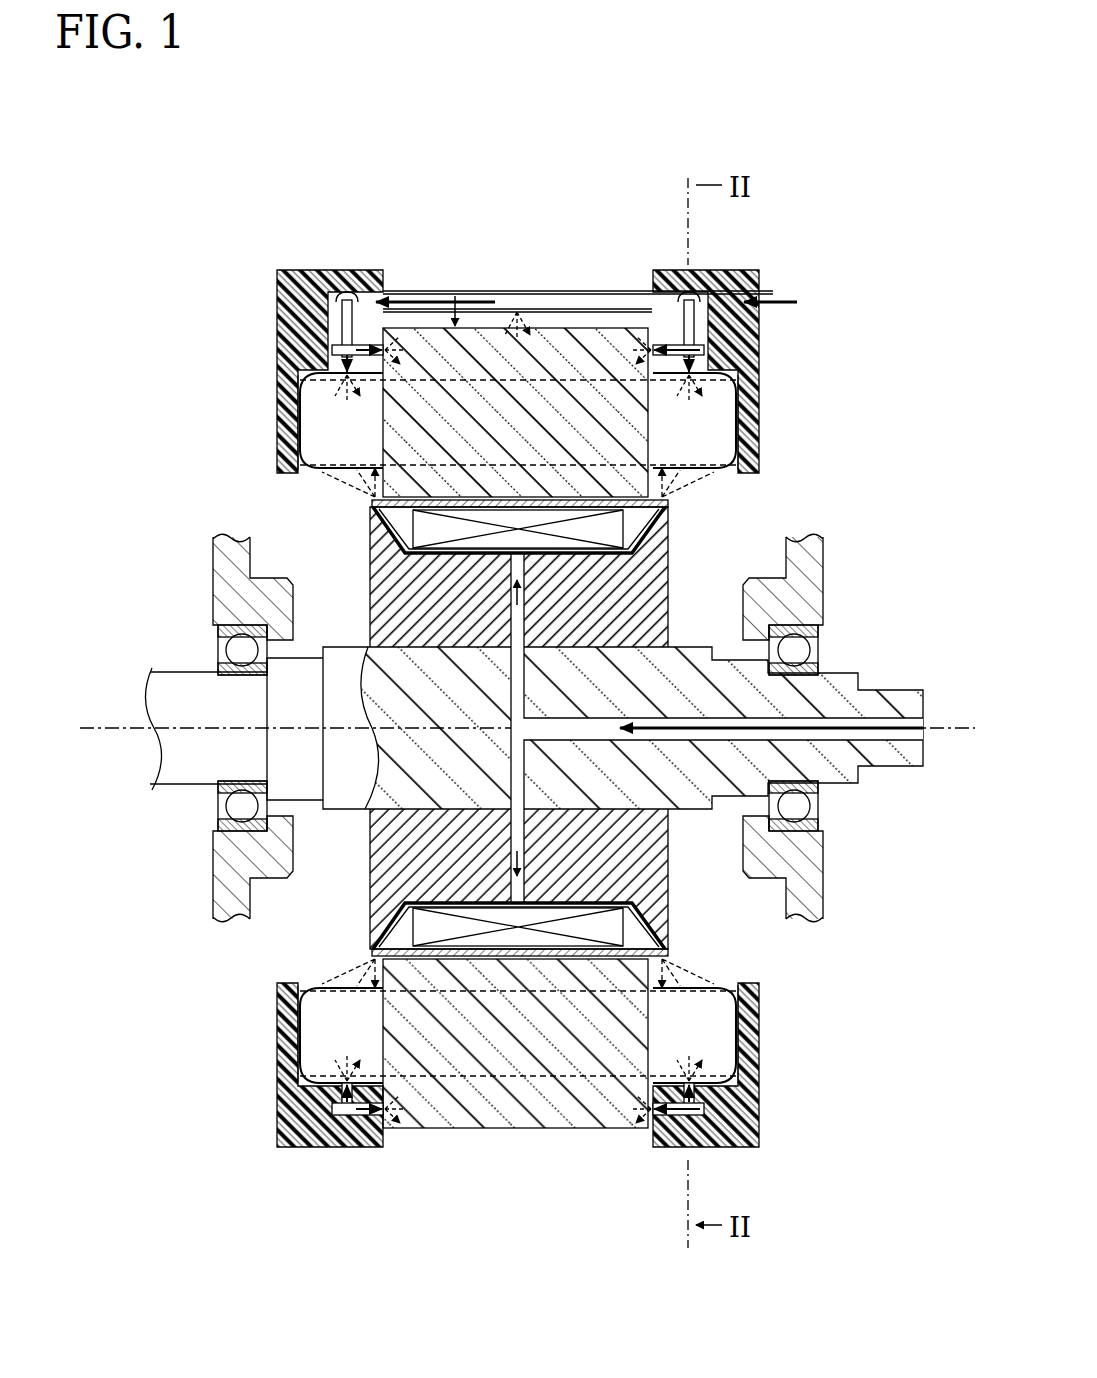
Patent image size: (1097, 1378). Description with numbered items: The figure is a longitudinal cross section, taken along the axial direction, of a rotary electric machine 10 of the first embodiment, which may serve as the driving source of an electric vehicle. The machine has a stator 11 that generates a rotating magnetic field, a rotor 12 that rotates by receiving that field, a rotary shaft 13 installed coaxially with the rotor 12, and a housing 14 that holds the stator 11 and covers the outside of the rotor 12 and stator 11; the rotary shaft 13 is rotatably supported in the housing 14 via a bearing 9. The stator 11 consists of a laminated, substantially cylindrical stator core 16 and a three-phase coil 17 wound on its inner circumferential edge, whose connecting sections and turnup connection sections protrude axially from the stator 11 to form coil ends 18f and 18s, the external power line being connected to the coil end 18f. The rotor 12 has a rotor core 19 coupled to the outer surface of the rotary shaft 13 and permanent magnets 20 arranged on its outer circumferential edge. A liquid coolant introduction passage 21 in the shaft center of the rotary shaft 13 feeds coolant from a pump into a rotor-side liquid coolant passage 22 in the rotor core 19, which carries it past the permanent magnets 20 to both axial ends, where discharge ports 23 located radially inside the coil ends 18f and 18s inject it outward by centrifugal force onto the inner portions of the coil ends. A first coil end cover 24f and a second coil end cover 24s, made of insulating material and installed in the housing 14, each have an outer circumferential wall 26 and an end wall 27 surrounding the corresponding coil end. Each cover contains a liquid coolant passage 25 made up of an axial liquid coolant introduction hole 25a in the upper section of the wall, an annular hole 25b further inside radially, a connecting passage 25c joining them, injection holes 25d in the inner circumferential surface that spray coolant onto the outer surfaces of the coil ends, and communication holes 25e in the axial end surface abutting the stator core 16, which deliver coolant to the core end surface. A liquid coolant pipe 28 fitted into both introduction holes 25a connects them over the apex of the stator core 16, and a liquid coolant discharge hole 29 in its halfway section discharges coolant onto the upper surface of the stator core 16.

The bearing 9 is at (243, 652).
The rotary electric machine 10 is at (596, 180).
The stator 11 is at (518, 636).
The rotor 12 is at (513, 839).
The rotary shaft 13 is at (850, 682).
The housing 14 is at (213, 572).
The stator core 16 is at (548, 326).
The coil 17 is at (573, 380).
The coil end 18s is at (305, 402).
The coil end 18f is at (728, 402).
The rotor core 19 is at (366, 632).
The permanent magnet 20 is at (425, 525).
The liquid coolant introduction passage 21 is at (876, 742).
The rotor-side liquid coolant passage 22 is at (457, 556).
The discharge port 23 is at (373, 498).
The second coil end cover 24s is at (277, 268).
The first coil end cover 24f is at (765, 268).
The liquid coolant passage 25 is at (534, 703).
The liquid coolant introduction hole 25a is at (333, 300).
The annular hole 25b is at (334, 350).
The connecting passage 25c is at (349, 305).
The injection hole 25d is at (330, 382).
The communication hole 25e is at (386, 300).
The outer circumferential wall 26 is at (347, 300).
The end wall 27 is at (288, 447).
The liquid coolant pipe 28 is at (575, 294).
The liquid coolant discharge hole 29 is at (497, 300).